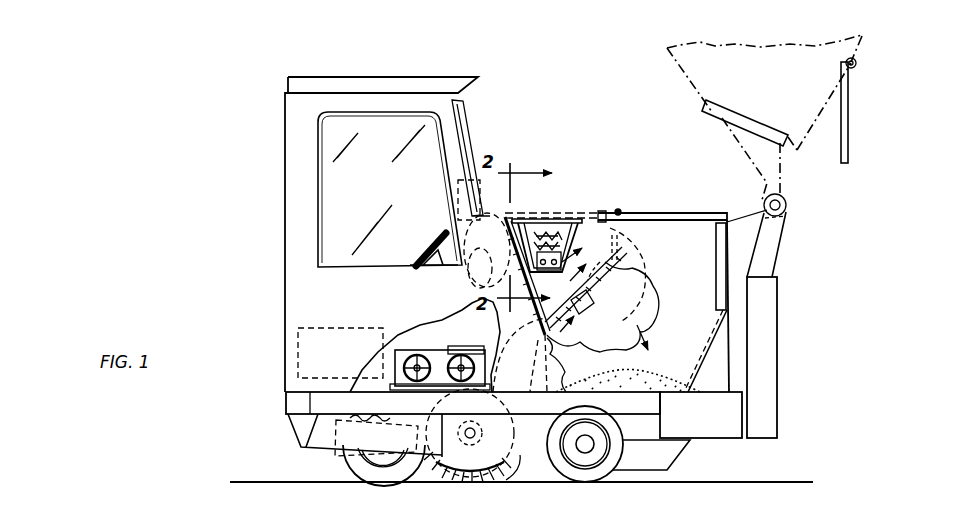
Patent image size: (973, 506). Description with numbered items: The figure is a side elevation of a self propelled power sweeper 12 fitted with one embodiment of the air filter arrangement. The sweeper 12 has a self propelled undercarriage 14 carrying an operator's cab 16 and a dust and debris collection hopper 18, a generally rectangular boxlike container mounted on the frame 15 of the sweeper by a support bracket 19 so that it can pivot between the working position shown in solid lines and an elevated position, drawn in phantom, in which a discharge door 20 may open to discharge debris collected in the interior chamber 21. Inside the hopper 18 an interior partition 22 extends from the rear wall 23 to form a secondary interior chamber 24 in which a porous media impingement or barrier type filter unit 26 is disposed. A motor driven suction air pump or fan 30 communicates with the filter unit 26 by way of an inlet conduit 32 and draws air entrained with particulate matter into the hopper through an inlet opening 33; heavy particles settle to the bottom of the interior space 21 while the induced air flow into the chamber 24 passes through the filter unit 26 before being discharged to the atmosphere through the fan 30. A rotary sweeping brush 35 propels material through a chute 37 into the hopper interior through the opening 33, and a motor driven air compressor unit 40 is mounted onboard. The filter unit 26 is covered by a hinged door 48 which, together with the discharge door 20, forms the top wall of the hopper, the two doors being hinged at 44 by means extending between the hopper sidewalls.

The power sweeper 12 is at (591, 158).
The self propelled undercarriage 14 is at (322, 447).
The frame 15 is at (744, 430).
The operator's cab 16 is at (285, 243).
The dust and debris collection hopper 18 is at (718, 358).
The support bracket 19 is at (748, 250).
The discharge door 20 is at (696, 212).
The interior chamber 21 is at (588, 324).
The interior partition 22 is at (623, 310).
The rear wall 23 is at (542, 372).
The secondary interior chamber 24 is at (574, 274).
The filter unit 26 is at (556, 214).
The suction air pump or fan 30 is at (447, 285).
The inlet conduit 32 is at (516, 186).
The inlet opening 33 is at (628, 392).
The rotary sweeping brush 35 is at (457, 482).
The chute 37 is at (480, 343).
The air compressor unit 40 is at (425, 356).
The hinge 44 is at (620, 211).
The hinged door 48 is at (606, 213).